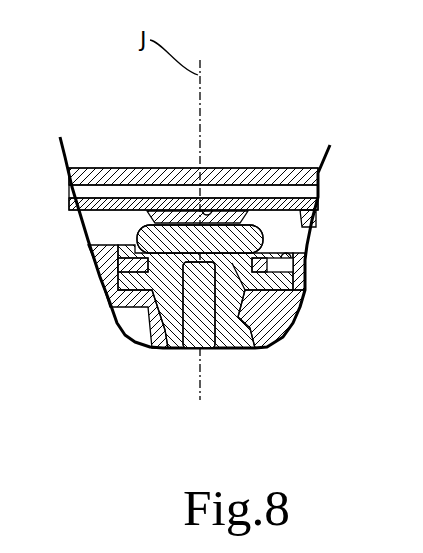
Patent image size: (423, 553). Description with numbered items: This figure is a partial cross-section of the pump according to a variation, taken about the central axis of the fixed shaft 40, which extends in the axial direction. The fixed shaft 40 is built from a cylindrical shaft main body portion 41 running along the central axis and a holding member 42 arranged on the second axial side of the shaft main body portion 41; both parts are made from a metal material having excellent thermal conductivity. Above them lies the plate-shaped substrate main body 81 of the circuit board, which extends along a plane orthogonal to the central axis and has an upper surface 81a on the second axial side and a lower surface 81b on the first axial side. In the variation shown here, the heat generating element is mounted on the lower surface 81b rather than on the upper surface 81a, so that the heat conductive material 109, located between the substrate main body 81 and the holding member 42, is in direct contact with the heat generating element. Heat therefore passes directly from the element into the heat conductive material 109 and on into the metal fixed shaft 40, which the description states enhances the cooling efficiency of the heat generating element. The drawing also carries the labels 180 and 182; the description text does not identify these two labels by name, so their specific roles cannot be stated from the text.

The fixed shaft 40 is at (242, 328).
The shaft main body portion 41 is at (207, 328).
The holding member 42 is at (305, 254).
The heat conductive material 109 is at (247, 240).
The gap 180 is at (100, 183).
The protrusion 182 is at (167, 211).
The substrate main body 81 is at (177, 131).
The upper surface 81a is at (237, 197).
The lower surface 81b is at (213, 207).